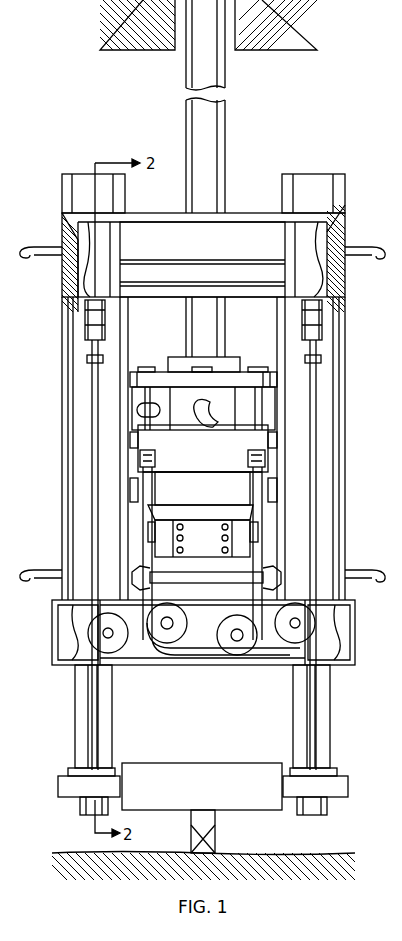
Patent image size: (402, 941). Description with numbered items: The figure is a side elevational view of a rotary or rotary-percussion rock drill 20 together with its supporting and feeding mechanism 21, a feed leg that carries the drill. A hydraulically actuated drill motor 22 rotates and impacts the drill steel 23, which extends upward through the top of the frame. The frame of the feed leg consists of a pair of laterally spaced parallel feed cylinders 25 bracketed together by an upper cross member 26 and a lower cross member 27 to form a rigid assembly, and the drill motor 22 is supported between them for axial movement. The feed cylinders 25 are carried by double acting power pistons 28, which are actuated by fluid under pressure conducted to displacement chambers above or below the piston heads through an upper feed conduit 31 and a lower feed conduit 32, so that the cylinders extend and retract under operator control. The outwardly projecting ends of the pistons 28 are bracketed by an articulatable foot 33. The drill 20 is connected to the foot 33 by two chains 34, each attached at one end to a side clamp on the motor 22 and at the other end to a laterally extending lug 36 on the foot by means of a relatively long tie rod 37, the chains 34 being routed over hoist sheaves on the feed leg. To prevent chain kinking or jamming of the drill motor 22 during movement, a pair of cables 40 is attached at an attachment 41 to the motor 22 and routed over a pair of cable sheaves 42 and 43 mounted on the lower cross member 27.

The rock drill 20 is at (242, 163).
The supporting and feeding mechanism 21 is at (82, 182).
The drill motor 22 is at (183, 418).
The drill steel 23 is at (223, 112).
The feed cylinders 25 is at (72, 372).
The upper cross member 26 is at (262, 272).
The lower cross member 27 is at (212, 667).
The double acting power pistons 28 is at (77, 708).
The upper feed conduit 31 is at (58, 246).
The lower feed conduit 32 is at (58, 575).
The articulatable foot 33 is at (212, 772).
The chains 34 is at (325, 330).
The lug 36 is at (75, 785).
The tie rod 37 is at (90, 475).
The cables 40 is at (147, 532).
The cable attachment 41 is at (142, 458).
The cable sheave 42 is at (157, 635).
The cable sheave 43 is at (100, 652).